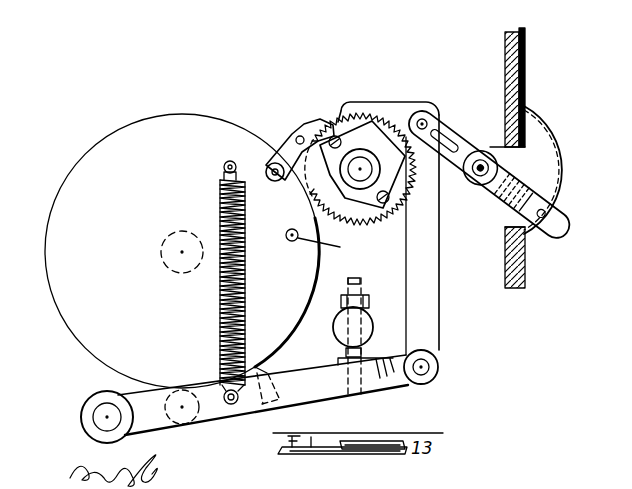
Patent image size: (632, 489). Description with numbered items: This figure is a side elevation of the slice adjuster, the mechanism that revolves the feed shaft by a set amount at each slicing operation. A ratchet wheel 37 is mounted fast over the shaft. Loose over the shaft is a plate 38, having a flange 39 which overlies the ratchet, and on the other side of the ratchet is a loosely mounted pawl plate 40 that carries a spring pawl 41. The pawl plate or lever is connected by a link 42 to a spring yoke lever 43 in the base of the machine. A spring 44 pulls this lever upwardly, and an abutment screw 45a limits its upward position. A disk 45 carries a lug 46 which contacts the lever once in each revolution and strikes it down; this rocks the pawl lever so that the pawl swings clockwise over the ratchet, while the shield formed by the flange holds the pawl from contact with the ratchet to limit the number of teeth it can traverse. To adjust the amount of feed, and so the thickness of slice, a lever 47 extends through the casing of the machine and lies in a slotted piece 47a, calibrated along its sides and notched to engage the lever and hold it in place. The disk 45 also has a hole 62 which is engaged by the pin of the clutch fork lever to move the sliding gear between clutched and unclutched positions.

The ratchet wheel 37 is at (366, 110).
The plate 38 is at (413, 112).
The flange 39 is at (285, 222).
The pawl plate 40 is at (348, 100).
The spring pawl 41 is at (292, 157).
The link 42 is at (428, 244).
The spring yoke lever 43 is at (313, 389).
The spring 44 is at (242, 299).
The disk 45 is at (157, 145).
The abutment screw 45a is at (360, 287).
The lug 46 is at (264, 371).
The lever 47 is at (504, 168).
The slotted piece 47a is at (562, 184).
The hole 62 is at (330, 249).